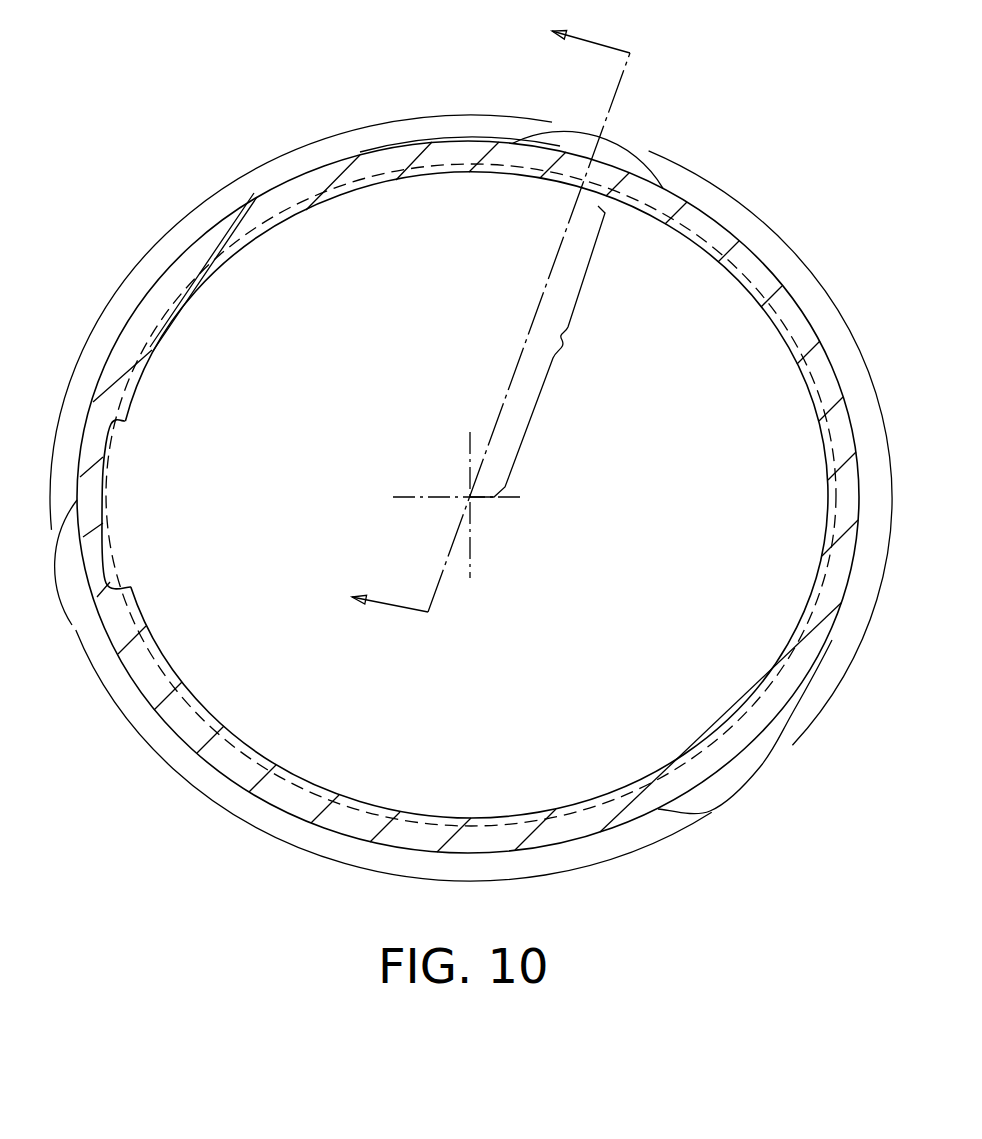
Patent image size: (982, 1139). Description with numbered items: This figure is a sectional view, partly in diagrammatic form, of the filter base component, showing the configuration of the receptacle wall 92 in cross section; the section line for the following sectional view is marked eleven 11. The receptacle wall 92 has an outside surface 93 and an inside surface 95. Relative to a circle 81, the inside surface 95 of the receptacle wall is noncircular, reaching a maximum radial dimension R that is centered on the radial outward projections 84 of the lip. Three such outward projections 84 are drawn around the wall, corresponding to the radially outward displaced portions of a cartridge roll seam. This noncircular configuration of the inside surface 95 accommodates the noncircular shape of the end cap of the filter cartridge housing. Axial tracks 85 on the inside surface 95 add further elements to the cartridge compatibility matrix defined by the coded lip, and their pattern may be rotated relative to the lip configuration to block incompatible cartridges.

The circle 81 is at (322, 803).
The radial outward projections 84 is at (570, 137).
The axial tracks 85 is at (113, 456).
The receptacle wall 92 is at (160, 298).
The outside surface 93 is at (353, 150).
The inside surface 95 is at (667, 765).
The section line 11- 11 is at (343, 592).
The maximum radial dimension R is at (499, 392).